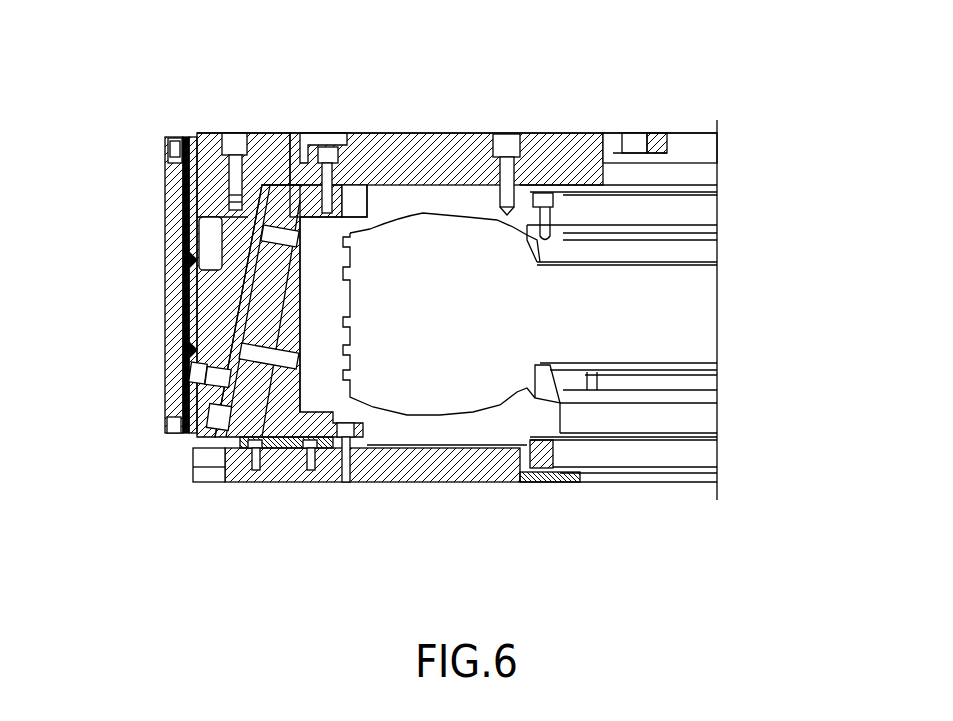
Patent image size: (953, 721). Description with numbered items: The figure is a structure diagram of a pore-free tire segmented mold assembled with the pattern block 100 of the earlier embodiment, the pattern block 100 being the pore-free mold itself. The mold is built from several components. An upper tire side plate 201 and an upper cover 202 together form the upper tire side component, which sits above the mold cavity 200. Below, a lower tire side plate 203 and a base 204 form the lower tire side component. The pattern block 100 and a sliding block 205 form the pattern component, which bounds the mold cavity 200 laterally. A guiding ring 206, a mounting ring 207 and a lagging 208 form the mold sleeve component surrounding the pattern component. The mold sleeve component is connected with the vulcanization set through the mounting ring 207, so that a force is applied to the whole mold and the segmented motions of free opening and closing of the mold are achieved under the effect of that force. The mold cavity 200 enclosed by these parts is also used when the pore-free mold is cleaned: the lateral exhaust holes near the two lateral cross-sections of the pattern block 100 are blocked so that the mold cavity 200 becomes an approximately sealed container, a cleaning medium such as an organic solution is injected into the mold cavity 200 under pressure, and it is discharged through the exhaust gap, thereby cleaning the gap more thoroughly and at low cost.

The pattern block 100 is at (347, 332).
The mold cavity 200 is at (487, 328).
The upper tire side plate 201 is at (443, 197).
The upper cover 202 is at (443, 137).
The lower tire side plate 203 is at (463, 427).
The base 204 is at (372, 480).
The sliding block 205 is at (197, 437).
The guiding ring 206 is at (163, 167).
The mounting ring 207 is at (272, 132).
The lagging 208 is at (165, 293).